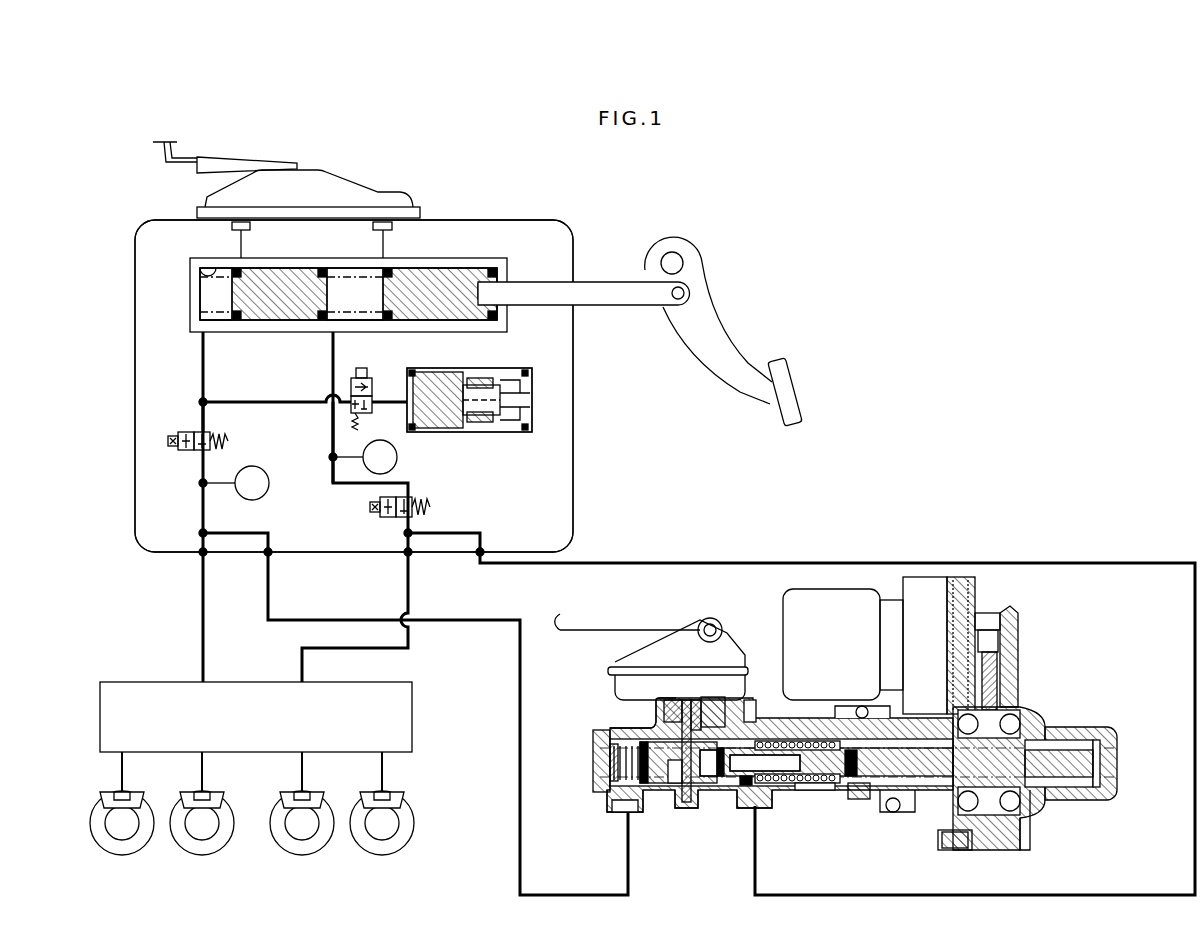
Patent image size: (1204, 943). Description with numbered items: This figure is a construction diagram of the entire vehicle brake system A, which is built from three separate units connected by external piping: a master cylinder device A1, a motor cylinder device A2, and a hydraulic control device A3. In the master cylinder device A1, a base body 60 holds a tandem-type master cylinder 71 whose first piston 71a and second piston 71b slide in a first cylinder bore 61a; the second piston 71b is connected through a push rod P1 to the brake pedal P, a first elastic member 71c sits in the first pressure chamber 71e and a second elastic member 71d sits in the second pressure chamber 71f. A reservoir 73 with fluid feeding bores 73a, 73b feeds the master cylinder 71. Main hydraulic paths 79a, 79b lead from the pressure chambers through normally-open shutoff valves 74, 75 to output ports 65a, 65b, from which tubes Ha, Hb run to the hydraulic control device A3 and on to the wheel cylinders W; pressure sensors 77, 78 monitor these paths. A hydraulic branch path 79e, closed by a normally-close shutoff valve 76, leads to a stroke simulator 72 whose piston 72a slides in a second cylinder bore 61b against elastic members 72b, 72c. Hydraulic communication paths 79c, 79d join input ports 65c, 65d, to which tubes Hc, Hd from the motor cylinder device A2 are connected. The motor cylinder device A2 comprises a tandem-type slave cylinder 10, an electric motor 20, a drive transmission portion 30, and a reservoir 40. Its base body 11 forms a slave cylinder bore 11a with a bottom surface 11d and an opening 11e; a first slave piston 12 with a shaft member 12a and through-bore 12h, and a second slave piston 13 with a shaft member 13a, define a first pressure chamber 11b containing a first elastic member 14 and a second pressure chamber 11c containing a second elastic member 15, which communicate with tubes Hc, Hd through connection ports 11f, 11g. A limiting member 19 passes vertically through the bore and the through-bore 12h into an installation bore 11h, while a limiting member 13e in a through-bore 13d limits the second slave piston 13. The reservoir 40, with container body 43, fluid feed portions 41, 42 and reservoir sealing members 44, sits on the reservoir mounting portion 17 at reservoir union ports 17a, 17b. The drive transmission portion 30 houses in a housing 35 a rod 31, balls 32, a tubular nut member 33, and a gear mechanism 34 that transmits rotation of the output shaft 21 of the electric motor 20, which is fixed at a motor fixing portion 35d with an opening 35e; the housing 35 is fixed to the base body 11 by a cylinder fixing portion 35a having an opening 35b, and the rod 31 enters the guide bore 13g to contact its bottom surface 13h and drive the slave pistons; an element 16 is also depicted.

The slave cylinder 10 is at (594, 778).
The base body 11 is at (718, 796).
The slave cylinder bore 11a is at (637, 724).
The first pressure chamber 11b is at (597, 756).
The second pressure chamber 11c is at (813, 793).
The bottom surface 11d is at (592, 781).
The opening 11e is at (923, 812).
The connection port 11f is at (621, 814).
The connection port 11g is at (756, 811).
The installation bore 11h is at (672, 793).
The first slave piston 12 is at (676, 801).
The shaft member 12a is at (656, 781).
The through-bore 12h is at (690, 801).
The second slave piston 13 is at (823, 746).
The shaft member 13a is at (800, 746).
The through-bore 13d is at (801, 755).
The limiting member 13e is at (766, 791).
The guide bore 13g is at (955, 834).
The bottom surface 13h is at (853, 779).
The first elastic member 14 is at (614, 743).
The second elastic member 15 is at (811, 782).
The ball 16 is at (894, 812).
The reservoir mounting portion 17 is at (616, 680).
The front reservoir union port 17a is at (694, 720).
The rear reservoir union port 17b is at (707, 725).
The limiting member 19 is at (685, 809).
The electric motor 20 is at (791, 592).
The output shaft 21 is at (1020, 652).
The drive transmission portion 30 is at (1118, 778).
The rod 31 is at (1086, 772).
The balls 32 is at (1026, 736).
The nut member 33 is at (1046, 822).
The gear mechanism 34 is at (1006, 710).
The housing 35 is at (1118, 751).
The cylinder fixing portion 35a is at (866, 708).
The opening 35b is at (859, 801).
The motor fixing portion 35d is at (976, 586).
The opening 35e is at (980, 633).
The reservoir 40 is at (603, 640).
The fluid feed portion 41 is at (684, 719).
The fluid feed portion 42 is at (747, 716).
The container body 43 is at (700, 627).
The reservoir sealing member 44 is at (672, 707).
The base body 60 is at (503, 220).
The first cylinder bore 61a is at (192, 266).
The second cylinder bore 61b is at (523, 390).
The output port 65a is at (203, 548).
The output port 65b is at (408, 548).
The input port 65c is at (272, 553).
The input port 65d is at (484, 553).
The master cylinder 71 is at (404, 258).
The first piston 71a is at (281, 300).
The second piston 71b is at (439, 300).
The first elastic member 71c is at (210, 334).
The second elastic member 71d is at (340, 334).
The first pressure chamber 71e is at (210, 294).
The second pressure chamber 71f is at (355, 294).
The stroke simulator 72 is at (478, 366).
The piston 72a is at (446, 428).
The elastic member 72b is at (476, 429).
The elastic member 72c is at (521, 431).
The reservoir 73 is at (350, 172).
The fluid feeding bore 73a is at (244, 234).
The fluid feeding bore 73b is at (377, 233).
The normally-open shutoff valve 74 is at (208, 452).
The normally-open shutoff valve 75 is at (421, 506).
The normally-close shutoff valve 76 is at (356, 414).
The pressure sensor 77 is at (234, 483).
The pressure sensor 78 is at (363, 457).
The main hydraulic path 79a is at (203, 418).
The main hydraulic path 79b is at (333, 432).
The hydraulic communication path 79c is at (236, 533).
The hydraulic communication path 79d is at (466, 533).
The hydraulic branch path 79e is at (252, 402).
The vehicle brake system A is at (868, 268).
The master cylinder device A1 is at (575, 510).
The motor cylinder device A2 is at (1008, 612).
The hydraulic control device A3 is at (256, 717).
The tube Ha is at (203, 593).
The tube Hb is at (408, 593).
The tube Hc is at (272, 593).
The tube Hd is at (483, 566).
The brake pedal P is at (786, 422).
The push rod P1 is at (612, 306).
The wheel cylinder W is at (128, 792).